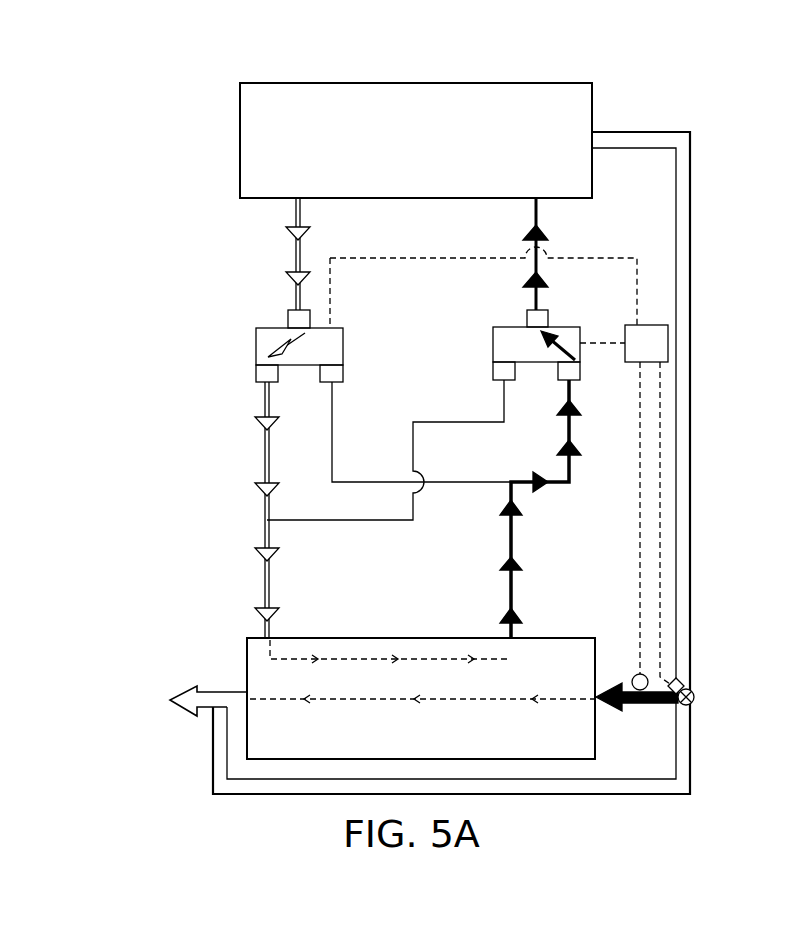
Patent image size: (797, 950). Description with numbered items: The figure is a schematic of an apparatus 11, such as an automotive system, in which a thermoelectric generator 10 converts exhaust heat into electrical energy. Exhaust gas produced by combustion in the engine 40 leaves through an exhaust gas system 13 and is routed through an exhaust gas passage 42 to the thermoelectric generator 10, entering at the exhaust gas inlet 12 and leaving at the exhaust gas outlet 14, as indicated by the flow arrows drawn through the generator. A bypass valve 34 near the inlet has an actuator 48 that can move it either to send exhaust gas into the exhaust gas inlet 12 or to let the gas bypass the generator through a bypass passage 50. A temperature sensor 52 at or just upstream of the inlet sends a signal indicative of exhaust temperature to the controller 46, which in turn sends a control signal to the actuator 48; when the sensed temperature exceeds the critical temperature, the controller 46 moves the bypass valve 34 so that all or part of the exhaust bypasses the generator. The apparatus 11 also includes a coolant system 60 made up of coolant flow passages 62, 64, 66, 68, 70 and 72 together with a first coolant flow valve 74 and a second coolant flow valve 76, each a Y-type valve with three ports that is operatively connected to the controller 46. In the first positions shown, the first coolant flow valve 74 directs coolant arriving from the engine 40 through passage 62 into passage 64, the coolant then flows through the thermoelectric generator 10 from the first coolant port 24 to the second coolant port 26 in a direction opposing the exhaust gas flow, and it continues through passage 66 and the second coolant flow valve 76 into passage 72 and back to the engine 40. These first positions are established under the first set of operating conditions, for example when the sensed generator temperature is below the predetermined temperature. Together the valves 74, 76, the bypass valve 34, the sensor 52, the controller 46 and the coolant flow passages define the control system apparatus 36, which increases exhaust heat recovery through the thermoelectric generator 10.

The thermoelectric generator 10 is at (552, 638).
The apparatus 11 is at (212, 92).
The exhaust gas inlet 12 is at (600, 705).
The exhaust gas system 13 is at (705, 157).
The exhaust gas outlet 14 is at (247, 690).
The first coolant port 24 is at (270, 640).
The second coolant port 26 is at (508, 638).
The bypass valve 34 is at (690, 690).
The control system apparatus 36 is at (228, 445).
The engine 40 is at (429, 153).
The exhaust gas passage 42 is at (690, 228).
The controller 46 is at (659, 355).
The actuator 48 is at (673, 687).
The bypass passage 50 is at (572, 795).
The temperature sensor 52 is at (637, 672).
The coolant system 60 is at (228, 392).
The coolant flow passage 62 is at (292, 240).
The coolant flow passage 64 is at (264, 547).
The coolant flow passage 66 is at (514, 538).
The coolant flow passage 68 is at (480, 484).
The coolant flow passage 70 is at (347, 522).
The coolant flow passage 72 is at (540, 247).
The first coolant flow valve 74 is at (256, 348).
The second coolant flow valve 76 is at (493, 345).